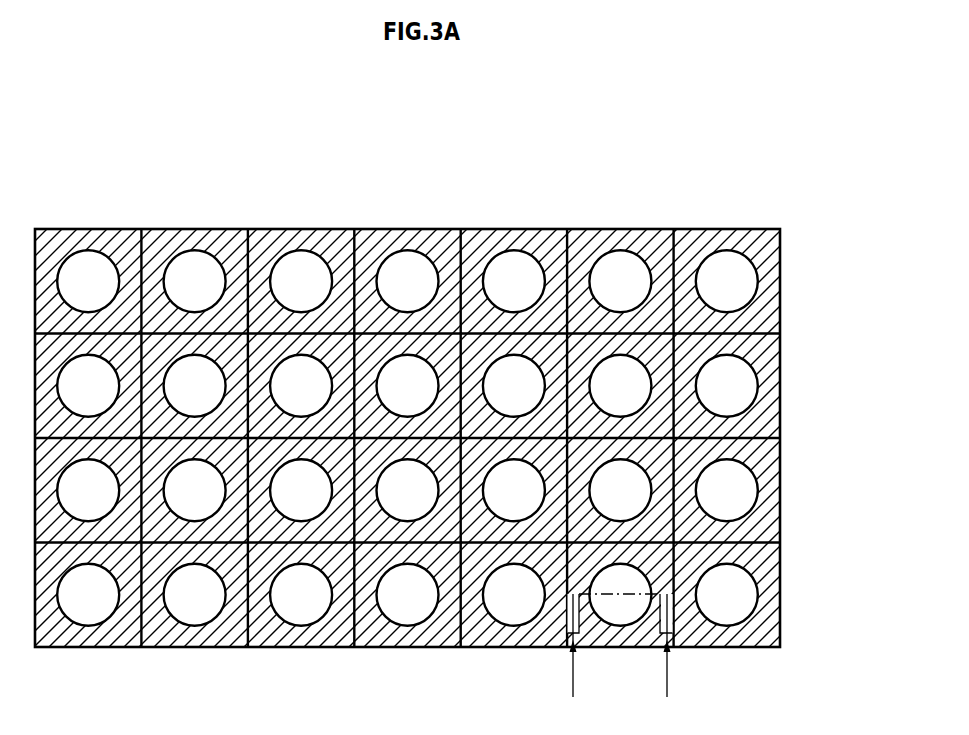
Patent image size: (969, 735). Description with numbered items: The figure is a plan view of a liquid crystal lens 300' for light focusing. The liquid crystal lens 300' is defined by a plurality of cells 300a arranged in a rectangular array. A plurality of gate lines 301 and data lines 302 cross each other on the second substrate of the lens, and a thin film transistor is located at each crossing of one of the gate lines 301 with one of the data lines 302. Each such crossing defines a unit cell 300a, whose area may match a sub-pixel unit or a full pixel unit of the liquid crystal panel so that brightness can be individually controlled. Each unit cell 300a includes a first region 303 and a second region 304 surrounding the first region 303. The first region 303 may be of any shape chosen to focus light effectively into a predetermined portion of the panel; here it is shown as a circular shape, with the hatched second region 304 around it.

The liquid crystal lens 300' is at (475, 416).
The unit cell 300a is at (843, 557).
The gate lines 301 is at (677, 453).
The data lines 302 is at (740, 538).
The first region 303 is at (750, 602).
The second region 304 is at (760, 553).